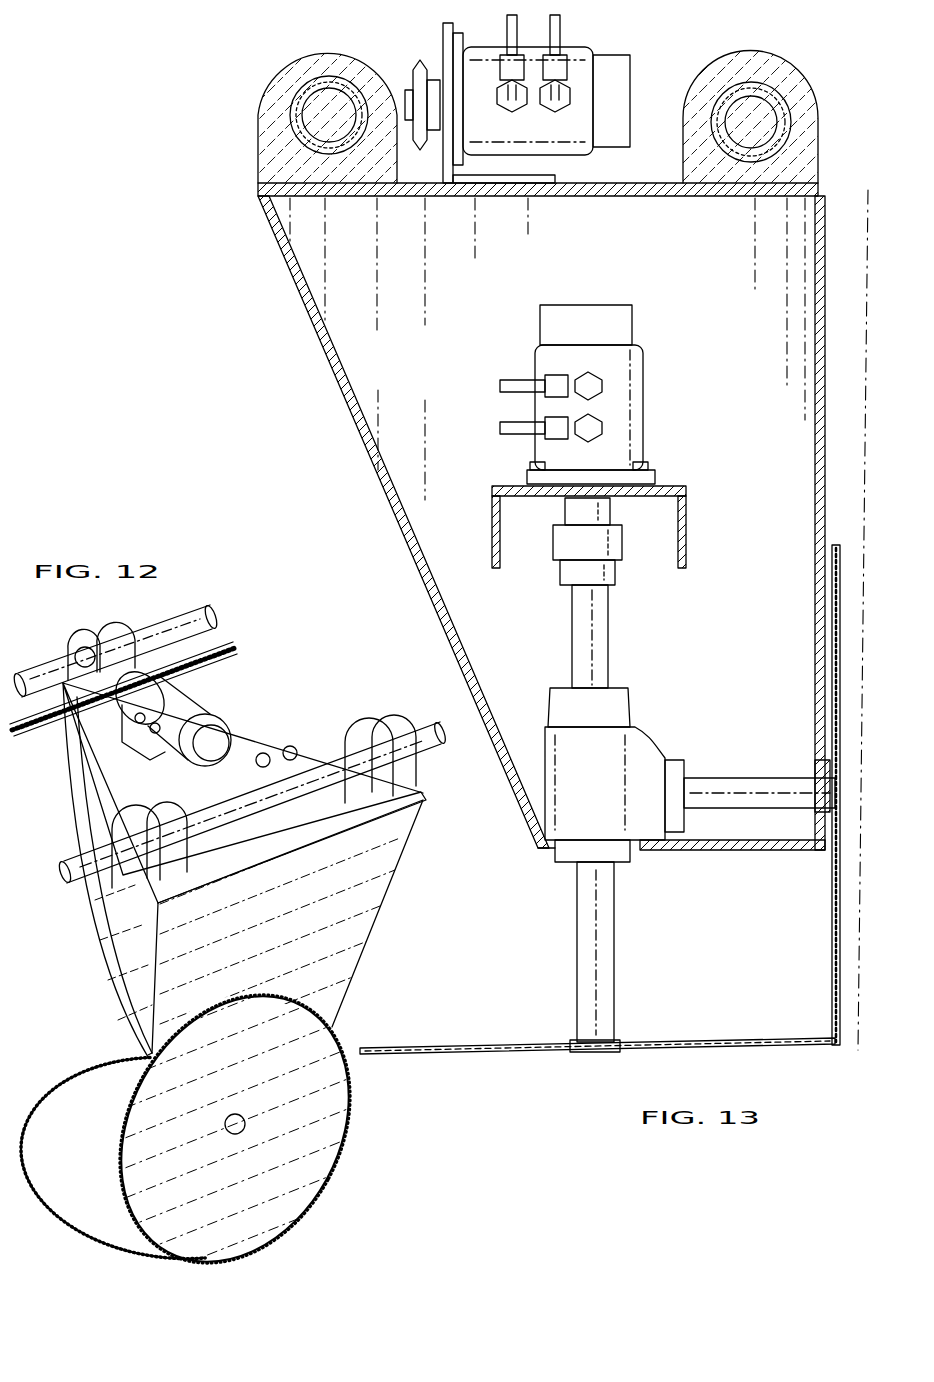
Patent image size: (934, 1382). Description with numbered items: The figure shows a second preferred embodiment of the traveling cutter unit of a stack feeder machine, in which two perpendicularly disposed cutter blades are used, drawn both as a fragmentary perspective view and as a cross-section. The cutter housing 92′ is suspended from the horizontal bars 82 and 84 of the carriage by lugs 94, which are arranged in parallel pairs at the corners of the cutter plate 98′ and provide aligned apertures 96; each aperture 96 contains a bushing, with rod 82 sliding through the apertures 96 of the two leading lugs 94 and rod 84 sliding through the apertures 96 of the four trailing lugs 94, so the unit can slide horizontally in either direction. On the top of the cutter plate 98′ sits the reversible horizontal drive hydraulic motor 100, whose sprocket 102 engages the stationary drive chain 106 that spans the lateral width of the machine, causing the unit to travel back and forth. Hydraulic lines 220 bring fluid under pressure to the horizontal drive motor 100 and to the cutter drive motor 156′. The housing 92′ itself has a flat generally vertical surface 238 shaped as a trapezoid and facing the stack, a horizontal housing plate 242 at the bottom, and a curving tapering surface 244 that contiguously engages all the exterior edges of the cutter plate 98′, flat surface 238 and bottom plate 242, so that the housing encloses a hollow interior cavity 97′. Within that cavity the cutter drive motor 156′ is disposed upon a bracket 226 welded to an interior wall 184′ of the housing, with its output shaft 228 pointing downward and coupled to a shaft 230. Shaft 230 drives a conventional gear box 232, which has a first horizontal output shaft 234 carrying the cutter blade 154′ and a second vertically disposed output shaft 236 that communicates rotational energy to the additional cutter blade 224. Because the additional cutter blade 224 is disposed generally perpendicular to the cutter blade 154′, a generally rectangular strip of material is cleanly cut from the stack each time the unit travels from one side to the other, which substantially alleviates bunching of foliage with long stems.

In FIG. 13, the horizontal bar 82 is at (305, 110).
In FIG. 12, the horizontal bar 82 is at (200, 612).
In FIG. 13, the horizontal bar 84 is at (792, 50).
In FIG. 12, the horizontal bar 84 is at (428, 728).
In FIG. 13, the lug 94 is at (364, 73).
In FIG. 12, the lug 94 is at (88, 625).
In FIG. 13, the aperture 96 is at (300, 80).
In FIG. 13, the cutter plate 98′ is at (618, 180).
In FIG. 13, the horizontal drive hydraulic motor 100 is at (588, 50).
In FIG. 12, the horizontal drive hydraulic motor 100 is at (215, 680).
In FIG. 13, the sprocket 102 is at (420, 68).
In FIG. 13, the stationary drive chain 106 is at (420, 62).
In FIG. 12, the stationary drive chain 106 is at (240, 650).
In FIG. 13, the hydraulic lines 220 is at (553, 18).
In FIG. 13, the curving tapering surface 244 is at (328, 362).
In FIG. 12, the curving tapering surface 244 is at (92, 920).
In FIG. 13, the cutter housing 92′ is at (304, 441).
In FIG. 12, the cutter housing 92′ is at (84, 964).
In FIG. 13, the hollow interior cavity 97′ is at (492, 317).
In FIG. 13, the cutter drive motor 156′ is at (645, 378).
In FIG. 13, the flat generally vertical surface 238 is at (815, 433).
In FIG. 13, the output shaft 228 is at (562, 502).
In FIG. 13, the bracket 226 is at (686, 520).
In FIG. 13, the interior wall 184′ is at (760, 597).
In FIG. 13, the shaft 230 is at (610, 630).
In FIG. 13, the gear box 232 is at (640, 715).
In FIG. 13, the first horizontal output shaft 234 is at (735, 778).
In FIG. 13, the horizontal housing plate 242 is at (735, 850).
In FIG. 13, the second vertically disposed output shaft 236 is at (614, 932).
In FIG. 13, the additional cutter blade 224 is at (480, 1055).
In FIG. 12, the additional cutter blade 224 is at (70, 1225).
In FIG. 13, the cutter blade 154′ is at (840, 1046).
In FIG. 12, the cutter blade 154′ is at (345, 1103).